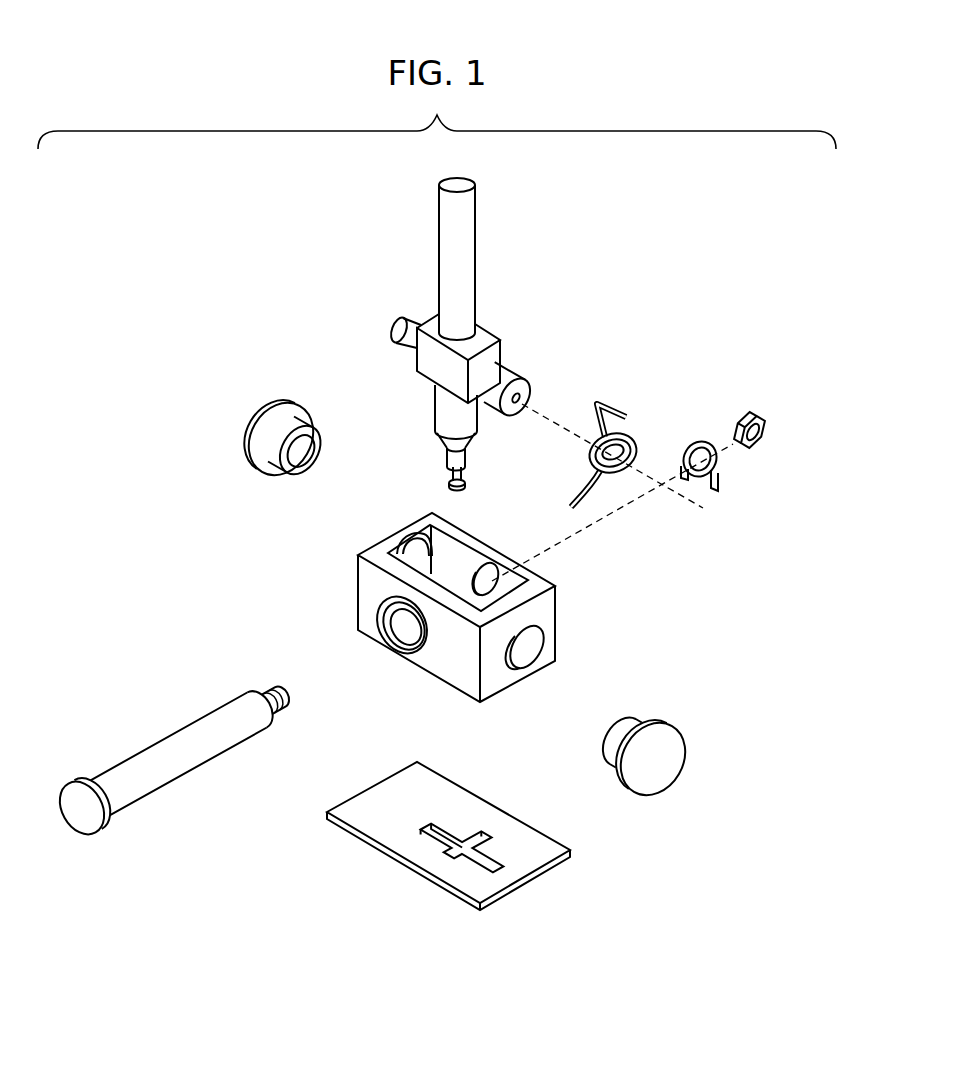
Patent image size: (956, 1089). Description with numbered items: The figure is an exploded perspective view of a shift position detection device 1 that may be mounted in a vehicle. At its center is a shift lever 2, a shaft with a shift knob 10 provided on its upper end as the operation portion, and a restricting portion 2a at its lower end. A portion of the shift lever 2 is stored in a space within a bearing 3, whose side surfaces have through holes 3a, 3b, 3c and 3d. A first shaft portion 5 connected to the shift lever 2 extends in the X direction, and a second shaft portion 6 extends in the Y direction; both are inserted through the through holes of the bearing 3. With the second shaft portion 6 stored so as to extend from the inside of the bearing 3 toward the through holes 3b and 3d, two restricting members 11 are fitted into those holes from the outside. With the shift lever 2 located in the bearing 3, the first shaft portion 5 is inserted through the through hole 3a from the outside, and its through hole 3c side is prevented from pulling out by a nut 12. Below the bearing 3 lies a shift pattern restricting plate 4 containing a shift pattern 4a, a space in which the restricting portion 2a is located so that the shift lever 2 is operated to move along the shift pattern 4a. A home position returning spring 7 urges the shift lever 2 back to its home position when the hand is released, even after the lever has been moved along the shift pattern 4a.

The shift position detection device 1 is at (172, 403).
The shift lever 2 is at (467, 276).
The restricting portion 2a is at (460, 459).
The bearing 3 is at (332, 593).
The through hole 3a is at (400, 638).
The through hole 3b is at (530, 647).
The through hole 3c is at (505, 578).
The through hole 3d is at (410, 546).
The shift pattern restricting plate 4 is at (590, 834).
The shift pattern 4a is at (468, 850).
The first shaft portion 5 is at (199, 792).
The second shaft portion 6 is at (520, 388).
The home position returning spring 7 is at (642, 427).
The shift knob 10 is at (466, 201).
The restricting member 11 is at (290, 400).
The nut 12 is at (762, 420).